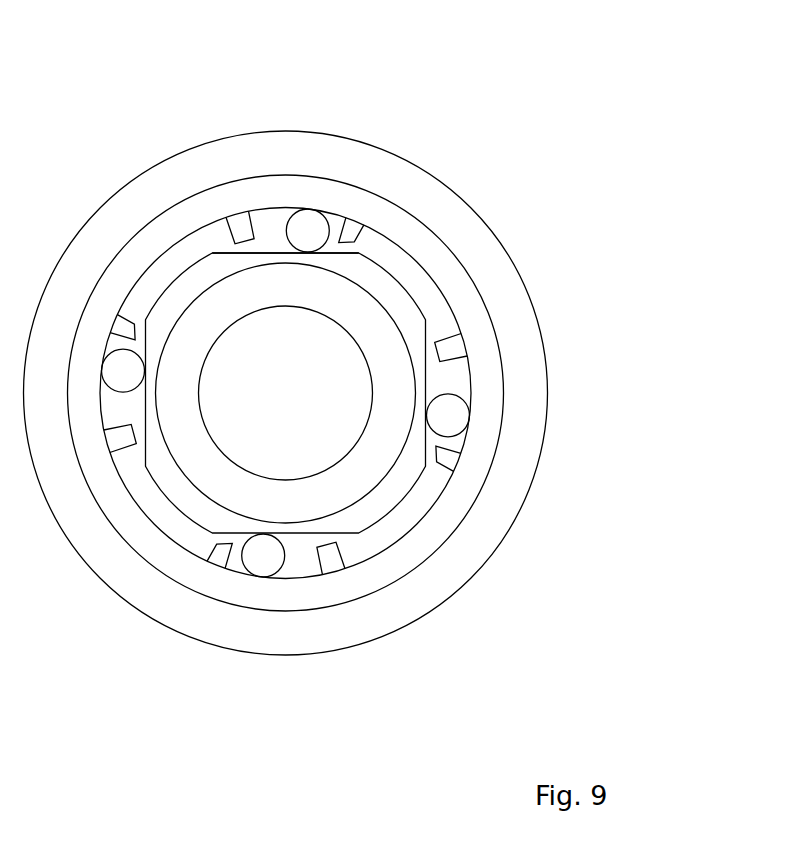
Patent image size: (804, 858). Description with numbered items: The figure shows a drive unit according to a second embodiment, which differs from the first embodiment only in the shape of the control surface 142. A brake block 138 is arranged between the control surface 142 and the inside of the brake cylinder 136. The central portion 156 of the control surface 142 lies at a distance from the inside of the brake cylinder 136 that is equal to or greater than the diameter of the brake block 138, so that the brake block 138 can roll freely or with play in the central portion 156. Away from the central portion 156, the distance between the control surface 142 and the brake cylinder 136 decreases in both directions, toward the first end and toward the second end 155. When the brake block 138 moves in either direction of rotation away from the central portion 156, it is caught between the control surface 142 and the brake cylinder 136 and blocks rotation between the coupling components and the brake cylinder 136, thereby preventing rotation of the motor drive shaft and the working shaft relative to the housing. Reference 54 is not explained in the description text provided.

The cage retainer 54 is at (236, 242).
The brake cylinder 136 is at (440, 254).
The brake block 138 is at (308, 243).
The control surface 142 is at (265, 252).
The second end 155 is at (347, 243).
The central portion 156 is at (280, 252).